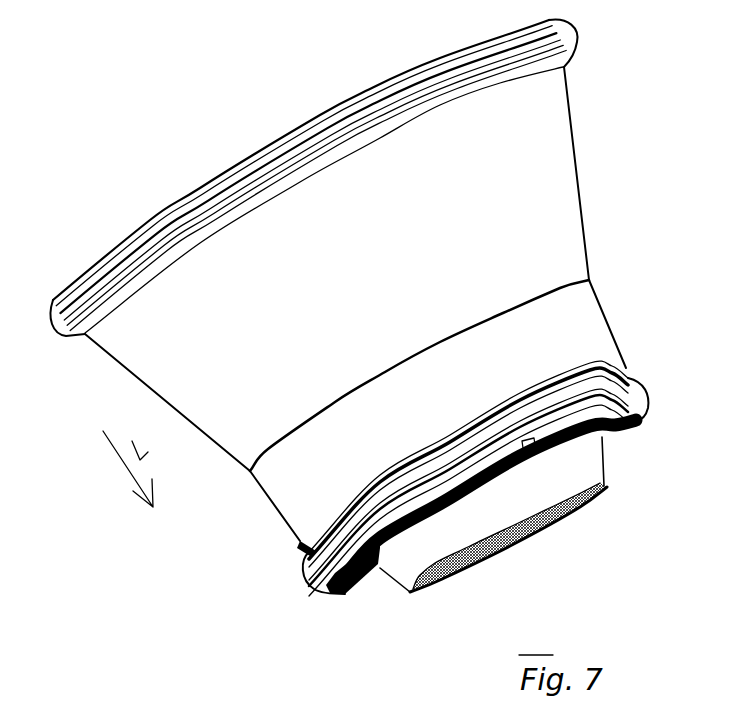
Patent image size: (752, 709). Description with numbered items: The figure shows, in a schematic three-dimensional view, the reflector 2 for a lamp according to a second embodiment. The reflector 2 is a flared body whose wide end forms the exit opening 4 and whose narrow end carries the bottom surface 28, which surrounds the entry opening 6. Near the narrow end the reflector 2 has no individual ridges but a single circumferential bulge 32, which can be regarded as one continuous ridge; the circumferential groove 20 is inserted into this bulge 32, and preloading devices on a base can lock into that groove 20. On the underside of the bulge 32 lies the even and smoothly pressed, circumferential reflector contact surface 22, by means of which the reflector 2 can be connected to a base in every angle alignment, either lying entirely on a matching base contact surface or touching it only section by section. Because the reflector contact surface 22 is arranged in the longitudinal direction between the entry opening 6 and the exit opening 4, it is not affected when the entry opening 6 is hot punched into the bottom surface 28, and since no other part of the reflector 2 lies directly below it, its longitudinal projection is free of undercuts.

The exit opening 4 is at (291, 122).
The reflector 2 is at (549, 152).
The circumferential bulge 32 is at (588, 333).
The circumferential groove 20 is at (627, 375).
The reflector contact surface 22 is at (350, 593).
The bottom surface 28 is at (605, 492).
The entry opening 6 is at (521, 540).